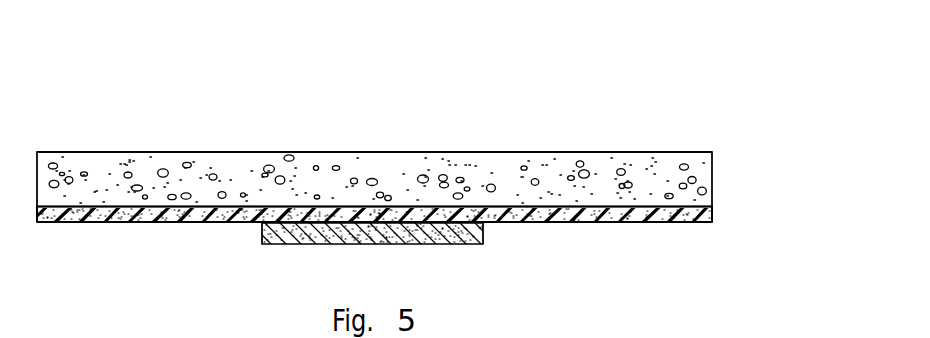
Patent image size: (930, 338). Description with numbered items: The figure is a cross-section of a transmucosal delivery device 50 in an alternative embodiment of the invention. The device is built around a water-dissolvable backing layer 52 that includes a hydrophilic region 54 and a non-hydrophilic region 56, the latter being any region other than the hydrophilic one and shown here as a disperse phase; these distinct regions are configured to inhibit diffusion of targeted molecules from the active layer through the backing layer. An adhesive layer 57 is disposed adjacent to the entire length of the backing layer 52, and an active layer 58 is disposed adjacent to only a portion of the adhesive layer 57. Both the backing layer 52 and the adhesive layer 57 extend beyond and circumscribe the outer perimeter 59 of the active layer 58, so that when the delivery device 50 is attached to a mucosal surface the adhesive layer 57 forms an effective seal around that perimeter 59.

The transmucosal delivery device 50 is at (611, 111).
The water-dissolvable backing layer 52 is at (725, 150).
The hydrophilic region 54 is at (457, 152).
The non-hydrophilic region 56 is at (137, 185).
The adhesive layer 57 is at (657, 222).
The active layer 58 is at (458, 244).
The outer perimeter 59 is at (262, 232).